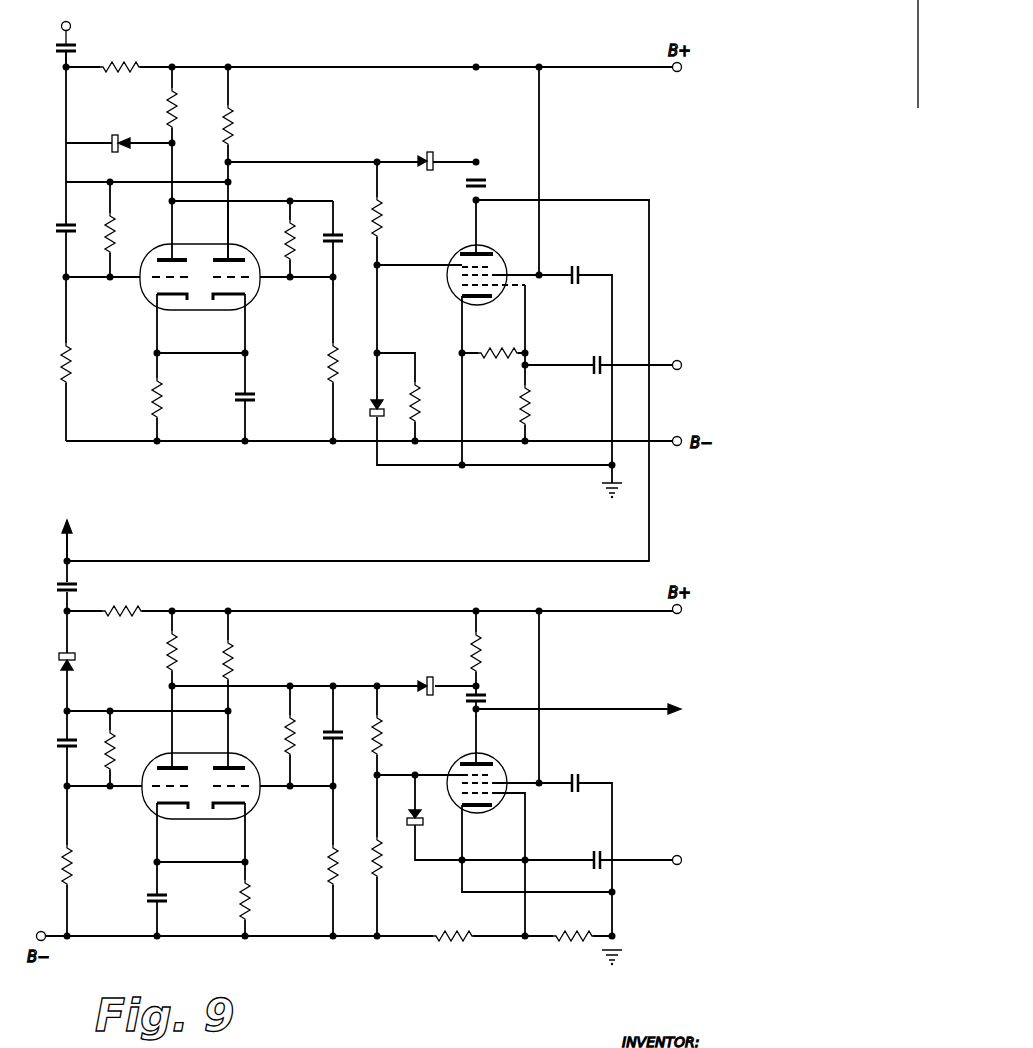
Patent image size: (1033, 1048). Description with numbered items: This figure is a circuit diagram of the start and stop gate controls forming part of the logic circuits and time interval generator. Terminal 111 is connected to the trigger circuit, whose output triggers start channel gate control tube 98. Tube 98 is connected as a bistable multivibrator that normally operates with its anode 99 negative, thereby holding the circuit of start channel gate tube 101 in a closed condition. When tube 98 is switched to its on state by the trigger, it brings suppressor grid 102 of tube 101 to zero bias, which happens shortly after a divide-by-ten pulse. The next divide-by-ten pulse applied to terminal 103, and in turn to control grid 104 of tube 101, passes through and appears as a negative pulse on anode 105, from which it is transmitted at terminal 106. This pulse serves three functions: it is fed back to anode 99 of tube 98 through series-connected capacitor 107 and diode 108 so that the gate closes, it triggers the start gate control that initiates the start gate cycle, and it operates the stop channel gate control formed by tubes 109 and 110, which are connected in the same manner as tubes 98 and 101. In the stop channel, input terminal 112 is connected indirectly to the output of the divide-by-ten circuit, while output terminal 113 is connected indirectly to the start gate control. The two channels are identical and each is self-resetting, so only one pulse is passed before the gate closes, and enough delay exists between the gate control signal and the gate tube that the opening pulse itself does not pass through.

The start channel gate control tube 98 is at (242, 243).
The anode 99 is at (222, 241).
The start channel gate tube 101 is at (463, 242).
The suppressor grid 102 is at (458, 266).
The terminal 103 is at (681, 359).
The control grid 104 is at (455, 291).
The anode 105 is at (485, 250).
The terminal 106 is at (72, 523).
The capacitor 107 is at (466, 183).
The diode 108 is at (429, 151).
The stop channel gate control tube 109 is at (147, 807).
The stop channel gate tube 110 is at (462, 752).
The terminal 111 is at (71, 20).
The input terminal 112 is at (673, 855).
The output terminal 113 is at (653, 708).